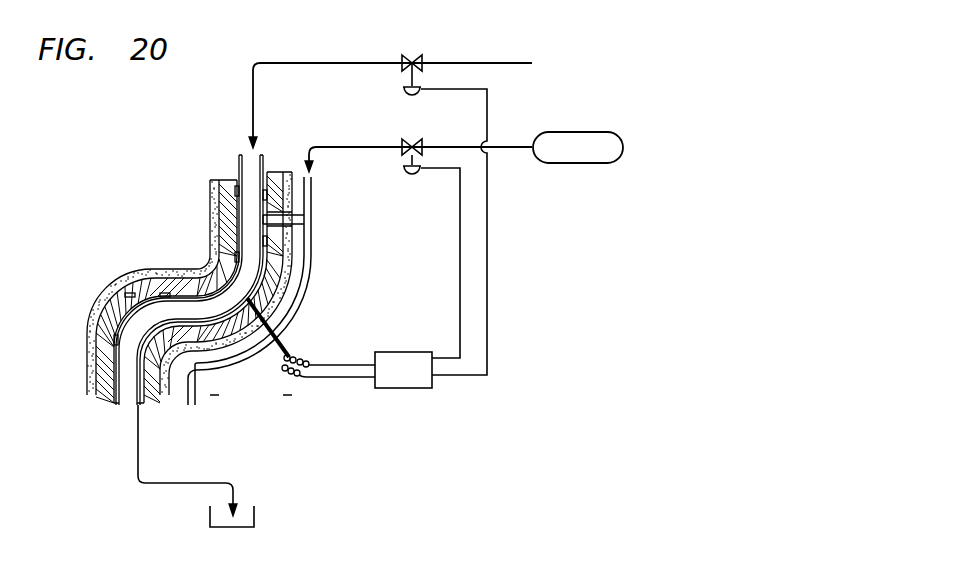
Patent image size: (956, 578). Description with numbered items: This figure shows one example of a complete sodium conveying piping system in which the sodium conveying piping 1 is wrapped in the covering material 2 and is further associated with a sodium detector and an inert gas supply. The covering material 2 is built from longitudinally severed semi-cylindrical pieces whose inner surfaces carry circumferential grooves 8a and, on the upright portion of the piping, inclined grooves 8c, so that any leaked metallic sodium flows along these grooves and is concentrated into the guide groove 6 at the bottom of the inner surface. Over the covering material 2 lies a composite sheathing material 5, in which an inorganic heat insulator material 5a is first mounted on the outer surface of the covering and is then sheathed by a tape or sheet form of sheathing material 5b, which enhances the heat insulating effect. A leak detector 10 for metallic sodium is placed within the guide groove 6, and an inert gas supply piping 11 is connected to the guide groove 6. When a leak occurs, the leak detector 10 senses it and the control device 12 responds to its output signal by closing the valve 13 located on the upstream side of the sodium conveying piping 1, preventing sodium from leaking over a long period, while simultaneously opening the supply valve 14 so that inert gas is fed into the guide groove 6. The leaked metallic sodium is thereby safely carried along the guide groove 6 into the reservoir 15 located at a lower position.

The sodium conveying piping 1 is at (237, 166).
The covering material 2 is at (117, 281).
The sheathing material 5 is at (92, 284).
The heat insulator material 5a is at (98, 368).
The sheathing material 5b is at (86, 345).
The guide groove 6 is at (158, 485).
The circumferential grooves 8a is at (166, 292).
The inclined grooves 8c is at (232, 190).
The leak detector 10 is at (270, 332).
The inert gas supply piping 11 is at (313, 257).
The control device 12 is at (407, 388).
The valve 13 is at (420, 52).
The supply valve 14 is at (412, 173).
The reservoir 15 is at (256, 516).